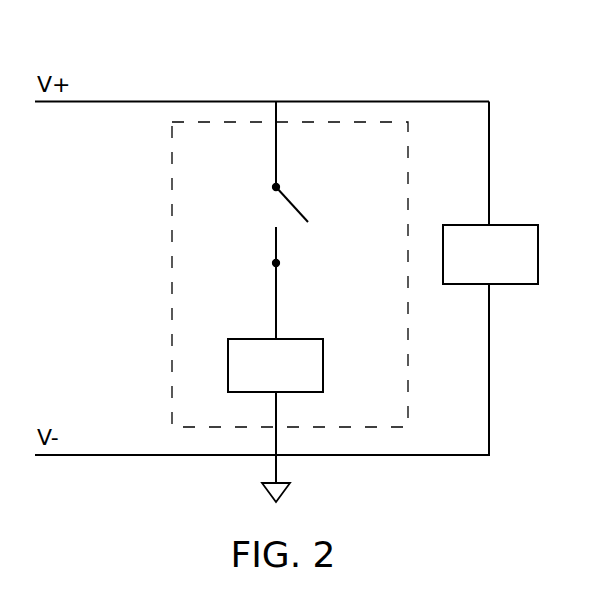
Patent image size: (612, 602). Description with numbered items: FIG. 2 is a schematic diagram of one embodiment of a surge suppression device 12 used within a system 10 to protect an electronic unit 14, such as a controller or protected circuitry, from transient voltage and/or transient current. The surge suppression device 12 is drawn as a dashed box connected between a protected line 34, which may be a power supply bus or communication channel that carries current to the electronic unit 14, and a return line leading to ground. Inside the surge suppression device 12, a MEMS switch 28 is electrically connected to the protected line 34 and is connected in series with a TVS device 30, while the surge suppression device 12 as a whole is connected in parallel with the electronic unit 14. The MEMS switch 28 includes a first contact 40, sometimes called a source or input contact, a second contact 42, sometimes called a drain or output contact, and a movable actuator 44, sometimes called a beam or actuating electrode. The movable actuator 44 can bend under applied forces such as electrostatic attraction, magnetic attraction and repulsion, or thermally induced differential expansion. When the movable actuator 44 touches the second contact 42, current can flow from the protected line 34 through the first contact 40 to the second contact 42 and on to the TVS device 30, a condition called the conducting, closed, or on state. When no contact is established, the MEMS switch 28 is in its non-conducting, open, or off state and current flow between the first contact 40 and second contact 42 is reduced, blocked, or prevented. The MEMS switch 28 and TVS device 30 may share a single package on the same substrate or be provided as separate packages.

The system 10 is at (374, 58).
The surge suppression device 12 is at (408, 160).
The electronic unit 14 is at (516, 224).
The MEMS switch 28 is at (285, 221).
The TVS device 30 is at (324, 364).
The protected line 34 is at (117, 101).
The first contact 40 is at (274, 186).
The second contact 42 is at (274, 262).
The movable actuator 44 is at (300, 208).